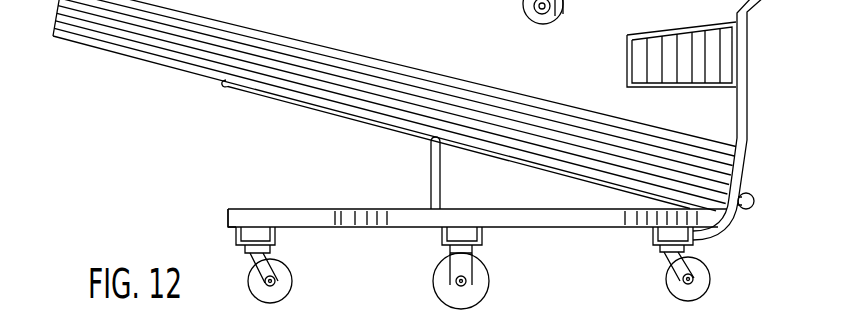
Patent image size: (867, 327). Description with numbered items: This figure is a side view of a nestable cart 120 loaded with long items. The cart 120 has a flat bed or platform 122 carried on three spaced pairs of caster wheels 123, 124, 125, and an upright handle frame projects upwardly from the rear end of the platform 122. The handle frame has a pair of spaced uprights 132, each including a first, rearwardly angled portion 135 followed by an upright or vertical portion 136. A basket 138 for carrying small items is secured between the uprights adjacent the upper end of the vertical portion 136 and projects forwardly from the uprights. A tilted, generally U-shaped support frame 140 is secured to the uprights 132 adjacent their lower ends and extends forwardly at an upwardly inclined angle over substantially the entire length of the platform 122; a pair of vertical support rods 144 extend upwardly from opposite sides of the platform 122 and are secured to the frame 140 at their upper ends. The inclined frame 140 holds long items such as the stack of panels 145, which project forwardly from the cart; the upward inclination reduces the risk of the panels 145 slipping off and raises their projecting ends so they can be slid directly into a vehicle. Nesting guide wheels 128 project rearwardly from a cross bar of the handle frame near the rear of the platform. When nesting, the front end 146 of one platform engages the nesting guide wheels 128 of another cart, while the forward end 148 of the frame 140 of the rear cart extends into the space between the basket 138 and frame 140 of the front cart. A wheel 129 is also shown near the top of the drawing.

The nestable cart 120 is at (250, 197).
The platform 122 is at (315, 214).
The caster wheels 123 is at (665, 277).
The caster wheels 124 is at (486, 274).
The caster wheels 125 is at (290, 271).
The nesting guide wheels 128 is at (748, 212).
The wheel 129 is at (523, 2).
The uprights 132 is at (743, 113).
The rearwardly angled portion 135 is at (730, 183).
The vertical portion 136 is at (745, 38).
The basket 138 is at (628, 53).
The support frame 140 is at (372, 119).
The vertical support rods 144 is at (430, 172).
The panels 145 is at (380, 63).
The front end 146 is at (228, 215).
The forward end 148 is at (224, 80).